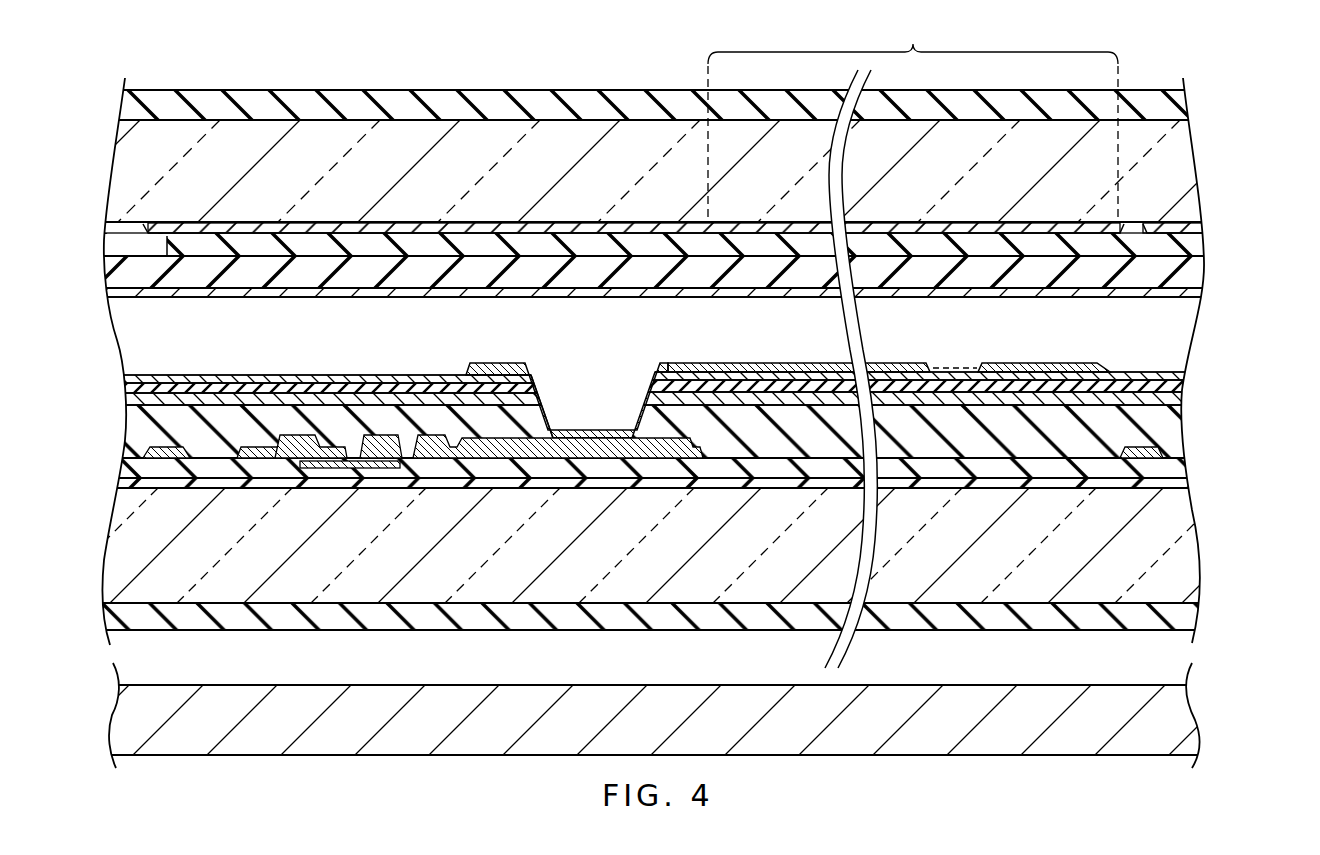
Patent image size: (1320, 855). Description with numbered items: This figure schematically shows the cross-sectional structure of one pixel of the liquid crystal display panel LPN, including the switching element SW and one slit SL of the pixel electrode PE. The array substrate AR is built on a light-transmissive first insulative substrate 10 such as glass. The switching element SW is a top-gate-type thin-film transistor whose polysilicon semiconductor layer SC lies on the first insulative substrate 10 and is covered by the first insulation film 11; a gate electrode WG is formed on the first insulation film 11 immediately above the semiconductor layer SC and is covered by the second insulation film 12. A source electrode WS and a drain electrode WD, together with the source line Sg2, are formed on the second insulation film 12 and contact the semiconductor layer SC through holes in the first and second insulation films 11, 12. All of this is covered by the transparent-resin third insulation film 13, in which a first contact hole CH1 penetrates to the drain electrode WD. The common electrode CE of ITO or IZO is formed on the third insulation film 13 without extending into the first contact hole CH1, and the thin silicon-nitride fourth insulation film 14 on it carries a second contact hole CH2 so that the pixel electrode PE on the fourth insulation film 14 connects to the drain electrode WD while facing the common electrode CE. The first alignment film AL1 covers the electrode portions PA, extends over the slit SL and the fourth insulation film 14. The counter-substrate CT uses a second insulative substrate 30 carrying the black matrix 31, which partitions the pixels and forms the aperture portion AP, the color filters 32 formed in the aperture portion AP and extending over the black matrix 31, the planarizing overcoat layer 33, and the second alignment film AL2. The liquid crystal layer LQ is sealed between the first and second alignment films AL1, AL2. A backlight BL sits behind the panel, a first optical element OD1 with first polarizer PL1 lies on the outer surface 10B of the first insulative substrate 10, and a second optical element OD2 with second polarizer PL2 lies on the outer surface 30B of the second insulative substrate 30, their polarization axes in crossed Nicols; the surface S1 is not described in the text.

The liquid crystal display panel LPN is at (668, 355).
The counter-substrate CT is at (667, 179).
The array substrate AR is at (670, 494).
The liquid crystal layer LQ is at (135, 327).
The second optical element OD2 is at (695, 102).
The second polarizer PL2 is at (1183, 103).
The outer surface of the second insulative substrate 30B is at (1152, 99).
The second insulative substrate 30 is at (135, 168).
The black matrix 31 is at (150, 229).
The color filters 32 is at (120, 252).
The overcoat layer 33 is at (120, 274).
The second alignment film AL2 is at (118, 293).
The first alignment film AL1 is at (124, 374).
The fourth insulation film 14 is at (120, 386).
The common electrode CE is at (1110, 397).
The third insulation film 13 is at (135, 420).
The second insulation film 12 is at (118, 466).
The first insulation film 11 is at (118, 486).
The surface of first insulating substrate S1 is at (160, 486).
The first insulative substrate 10 is at (135, 575).
The first optical element OD1 is at (696, 620).
The first polarizer PL1 is at (1183, 618).
The outer surface of the first insulative substrate 10B is at (1143, 620).
The backlight BL is at (1183, 738).
The pixel electrode PE is at (665, 364).
The electrode portions PA is at (905, 372).
The slit SL is at (965, 368).
The first contact hole CH1 is at (540, 385).
The second contact hole CH2 is at (570, 430).
The drain electrode WD is at (430, 435).
The source electrode WS is at (305, 435).
The gate electrode WG is at (384, 460).
The semiconductor layer SC is at (352, 480).
The switching element SW is at (320, 512).
The source line Sg2 is at (1140, 446).
The aperture portion AP is at (913, 120).